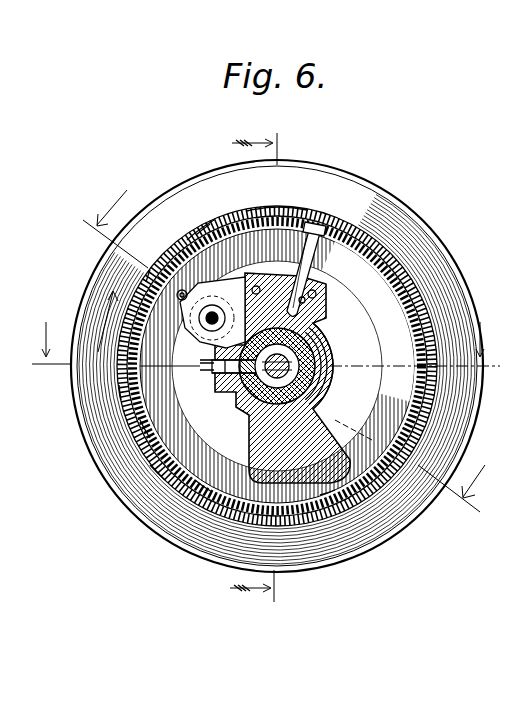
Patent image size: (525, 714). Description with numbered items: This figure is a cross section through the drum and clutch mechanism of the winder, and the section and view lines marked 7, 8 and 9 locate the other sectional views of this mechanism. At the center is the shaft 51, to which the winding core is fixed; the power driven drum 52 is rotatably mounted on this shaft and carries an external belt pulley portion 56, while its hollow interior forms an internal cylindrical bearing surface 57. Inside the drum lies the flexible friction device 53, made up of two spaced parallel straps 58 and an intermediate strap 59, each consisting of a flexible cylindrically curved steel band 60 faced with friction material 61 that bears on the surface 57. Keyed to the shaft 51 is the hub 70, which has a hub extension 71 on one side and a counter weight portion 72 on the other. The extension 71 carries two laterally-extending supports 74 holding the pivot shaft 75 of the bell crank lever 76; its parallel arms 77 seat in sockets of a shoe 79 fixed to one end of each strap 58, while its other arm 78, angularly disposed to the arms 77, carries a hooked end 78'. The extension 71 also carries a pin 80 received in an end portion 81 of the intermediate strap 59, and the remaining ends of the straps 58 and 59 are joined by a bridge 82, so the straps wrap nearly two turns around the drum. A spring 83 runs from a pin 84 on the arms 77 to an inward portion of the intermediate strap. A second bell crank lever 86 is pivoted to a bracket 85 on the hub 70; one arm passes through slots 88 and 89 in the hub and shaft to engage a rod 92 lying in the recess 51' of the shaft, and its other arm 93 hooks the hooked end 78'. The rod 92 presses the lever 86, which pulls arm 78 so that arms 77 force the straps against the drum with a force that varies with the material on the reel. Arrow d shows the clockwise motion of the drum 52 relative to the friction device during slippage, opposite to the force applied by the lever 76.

The section line 7- 7 is at (270, 360).
The section line 8- 8 is at (256, 370).
The section line 9- 9 is at (264, 349).
The arrow d is at (70, 309).
The shaft 51 is at (338, 359).
The recess of shaft 51' is at (277, 366).
The drum 52 is at (402, 267).
The flexible friction device 53 is at (443, 300).
The belt pulley portion 56 is at (398, 202).
The internal cylindrical bearing surface 57 is at (203, 487).
The spaced parallel straps 58 is at (265, 208).
The intermediate strap 59 is at (157, 470).
The steel bands 60 is at (427, 430).
The facings 61 is at (120, 392).
The hub 70 is at (322, 372).
The hub extension 71 is at (316, 300).
The counter weight portion 72 is at (327, 484).
The laterally-extending supports 74 is at (226, 287).
The shaft 75 is at (203, 326).
The bell crank lever 76 is at (178, 248).
The parallel arms 77 is at (148, 265).
The arm 78 is at (231, 396).
The hooked end 78' is at (144, 351).
The shoe 79 is at (180, 291).
The pin 80 is at (314, 266).
The end portion of strap 81 is at (320, 226).
The bridge 82 is at (238, 228).
The spring 83 is at (190, 237).
The pin 84 is at (197, 235).
The bracket 85 is at (147, 432).
The bell crank lever 86 is at (212, 370).
The slot of hub 88 is at (298, 270).
The slot of shaft 89 is at (318, 393).
The rod 92 is at (308, 330).
The arm 93 is at (197, 367).